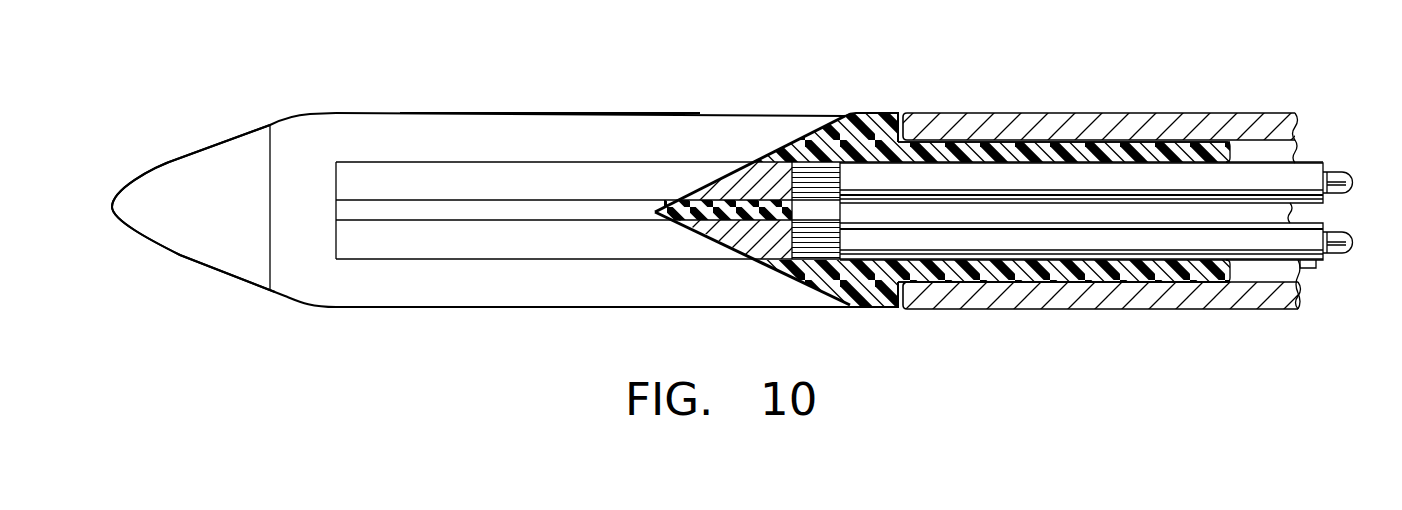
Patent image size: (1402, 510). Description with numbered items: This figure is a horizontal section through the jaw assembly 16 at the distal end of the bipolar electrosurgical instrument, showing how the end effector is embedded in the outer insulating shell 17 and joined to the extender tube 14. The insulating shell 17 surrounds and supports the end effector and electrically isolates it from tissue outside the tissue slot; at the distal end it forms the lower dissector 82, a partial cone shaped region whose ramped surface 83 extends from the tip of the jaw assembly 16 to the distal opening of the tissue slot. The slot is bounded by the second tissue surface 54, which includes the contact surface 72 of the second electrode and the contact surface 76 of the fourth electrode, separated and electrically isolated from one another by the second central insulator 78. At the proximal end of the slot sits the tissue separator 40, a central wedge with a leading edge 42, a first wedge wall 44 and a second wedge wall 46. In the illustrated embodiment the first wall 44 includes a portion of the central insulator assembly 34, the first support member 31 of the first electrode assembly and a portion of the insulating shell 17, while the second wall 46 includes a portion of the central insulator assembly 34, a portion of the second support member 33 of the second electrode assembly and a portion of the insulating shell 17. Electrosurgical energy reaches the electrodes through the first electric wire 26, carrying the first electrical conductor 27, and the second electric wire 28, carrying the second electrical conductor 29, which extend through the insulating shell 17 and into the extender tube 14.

The extender tube 14 is at (1125, 113).
The jaw assembly 16 is at (783, 113).
The insulating shell 17 is at (880, 137).
The first electric wire 26 is at (1313, 263).
The first electrical conductor 27 is at (1333, 235).
The second electric wire 28 is at (1297, 163).
The second electrical conductor 29 is at (1333, 177).
The first support member 31 is at (793, 275).
The second support member 33 is at (782, 175).
The central insulator assembly 34 is at (820, 268).
The tissue separator 40 is at (728, 284).
The leading edge 42 is at (660, 213).
The first wedge wall 44 is at (667, 211).
The second wedge wall 46 is at (667, 207).
The second tissue surface 54 is at (481, 133).
The contact surface of second electrode 72 is at (431, 250).
The contact surface of fourth electrode 76 is at (393, 170).
The second central insulator 78 is at (376, 212).
The lower dissector 82 is at (197, 230).
The ramped surface 83 is at (190, 197).